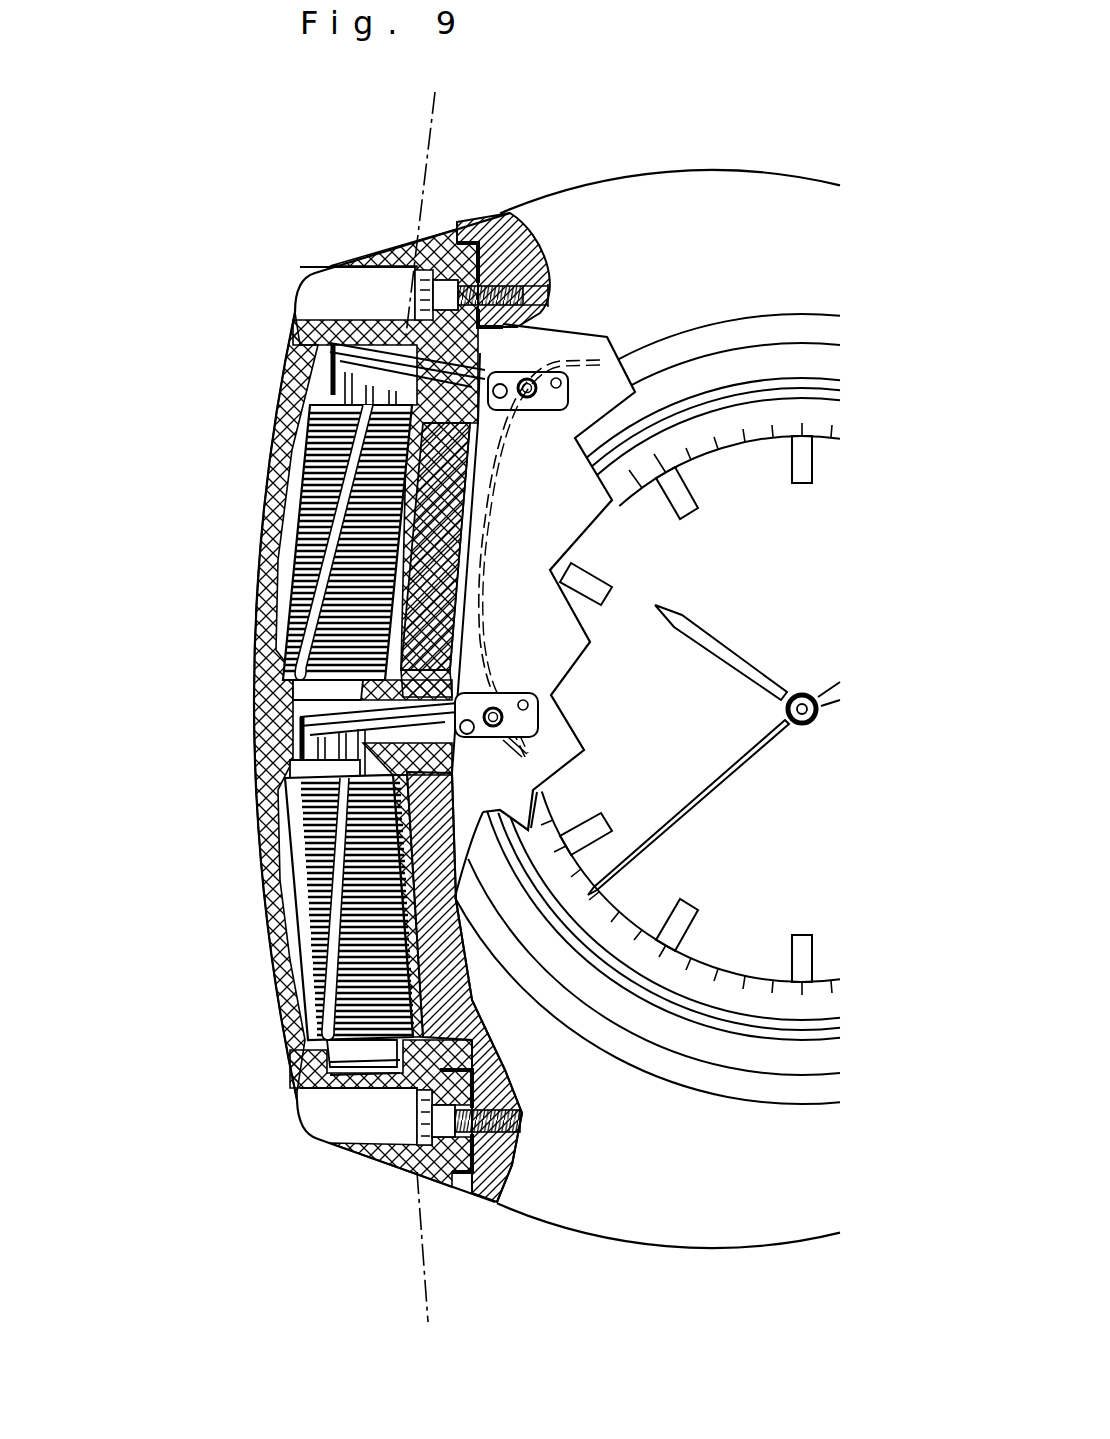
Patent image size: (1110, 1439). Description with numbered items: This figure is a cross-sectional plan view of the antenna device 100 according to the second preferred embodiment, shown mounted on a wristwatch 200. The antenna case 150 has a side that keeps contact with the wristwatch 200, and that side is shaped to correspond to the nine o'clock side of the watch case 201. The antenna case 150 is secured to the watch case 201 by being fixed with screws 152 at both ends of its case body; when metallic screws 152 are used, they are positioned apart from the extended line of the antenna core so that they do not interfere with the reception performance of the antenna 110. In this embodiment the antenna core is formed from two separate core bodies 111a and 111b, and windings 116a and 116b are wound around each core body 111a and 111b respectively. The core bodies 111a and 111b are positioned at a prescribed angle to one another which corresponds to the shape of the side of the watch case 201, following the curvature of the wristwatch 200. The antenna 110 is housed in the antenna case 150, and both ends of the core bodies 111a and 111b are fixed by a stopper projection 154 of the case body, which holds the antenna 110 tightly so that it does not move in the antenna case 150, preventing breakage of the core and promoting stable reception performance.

The antenna module unit 100 is at (310, 244).
The antenna 110 is at (258, 822).
The core body 111a is at (292, 668).
The core body 111b is at (326, 1060).
The winding 116a is at (283, 502).
The winding 116b is at (303, 935).
The antenna case 150 is at (283, 883).
The screw 152 is at (444, 284).
The stopper projection 154 is at (326, 410).
The wristwatch 200 is at (546, 184).
The watch case 201 is at (605, 1190).